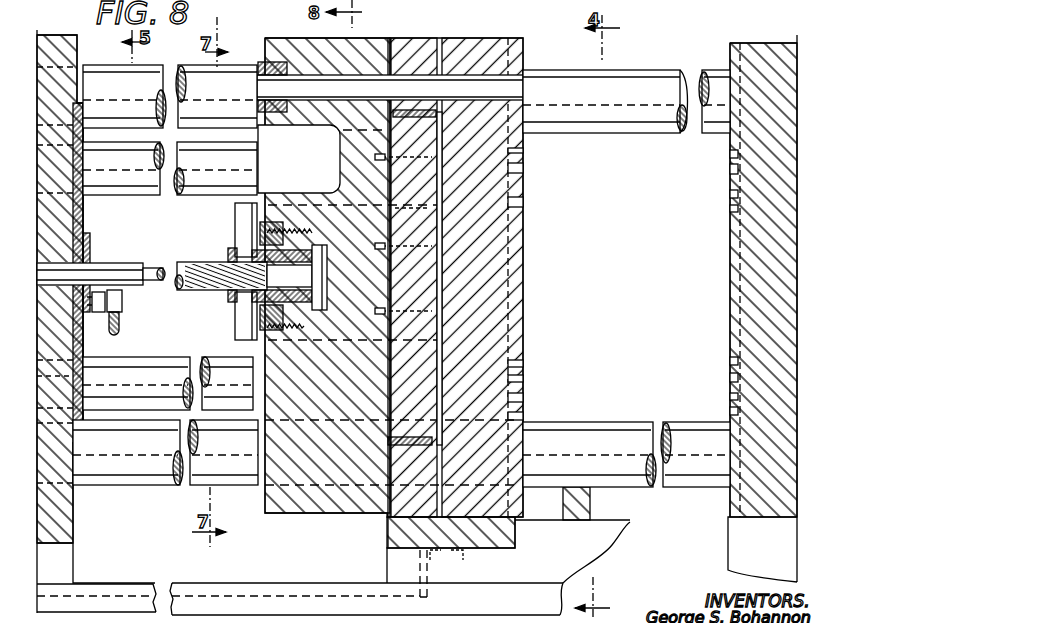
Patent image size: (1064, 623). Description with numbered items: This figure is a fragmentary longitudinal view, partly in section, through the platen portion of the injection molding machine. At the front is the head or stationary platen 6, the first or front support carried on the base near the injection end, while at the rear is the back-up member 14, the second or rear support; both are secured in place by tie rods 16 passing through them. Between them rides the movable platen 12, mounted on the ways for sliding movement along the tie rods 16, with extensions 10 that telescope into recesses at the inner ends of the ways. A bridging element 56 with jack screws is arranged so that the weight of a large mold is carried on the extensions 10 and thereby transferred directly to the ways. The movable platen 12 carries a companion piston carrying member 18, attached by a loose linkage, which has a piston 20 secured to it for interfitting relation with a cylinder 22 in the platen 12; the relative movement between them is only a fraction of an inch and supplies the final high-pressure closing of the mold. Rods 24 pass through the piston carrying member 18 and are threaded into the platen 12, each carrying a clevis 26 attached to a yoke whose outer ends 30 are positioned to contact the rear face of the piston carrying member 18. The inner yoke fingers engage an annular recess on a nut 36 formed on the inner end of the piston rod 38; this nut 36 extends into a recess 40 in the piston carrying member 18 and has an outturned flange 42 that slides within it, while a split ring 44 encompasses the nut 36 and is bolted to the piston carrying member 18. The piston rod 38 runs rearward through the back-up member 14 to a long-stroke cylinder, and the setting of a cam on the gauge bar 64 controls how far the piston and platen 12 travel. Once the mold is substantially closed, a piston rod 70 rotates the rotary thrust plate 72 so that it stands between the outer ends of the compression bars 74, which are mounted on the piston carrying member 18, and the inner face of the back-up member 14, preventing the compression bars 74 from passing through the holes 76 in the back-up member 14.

The stationary platen 6 is at (753, 44).
The extensions 10 is at (612, 546).
The movable platen 12 is at (498, 40).
The back-up member 14 is at (66, 51).
The tie rods 16 is at (627, 120).
The piston carrying member 18 is at (274, 38).
The piston 20 is at (420, 345).
The cylinder 22 is at (440, 266).
The rods 24 is at (322, 203).
The clevis 26 is at (232, 216).
The yoke member outer ends 30 is at (247, 239).
The nut 36 is at (231, 296).
The piston rod 38 is at (204, 262).
The recess 40 is at (322, 268).
The outturned flange 42 is at (313, 231).
The split ring 44 is at (283, 338).
The bridging element 56 is at (591, 505).
The gauge bar 64 is at (168, 584).
The piston rod 70 is at (122, 322).
The rotary thrust plate 72 is at (86, 214).
The compression bars 74 is at (210, 182).
The holes 76 is at (63, 376).